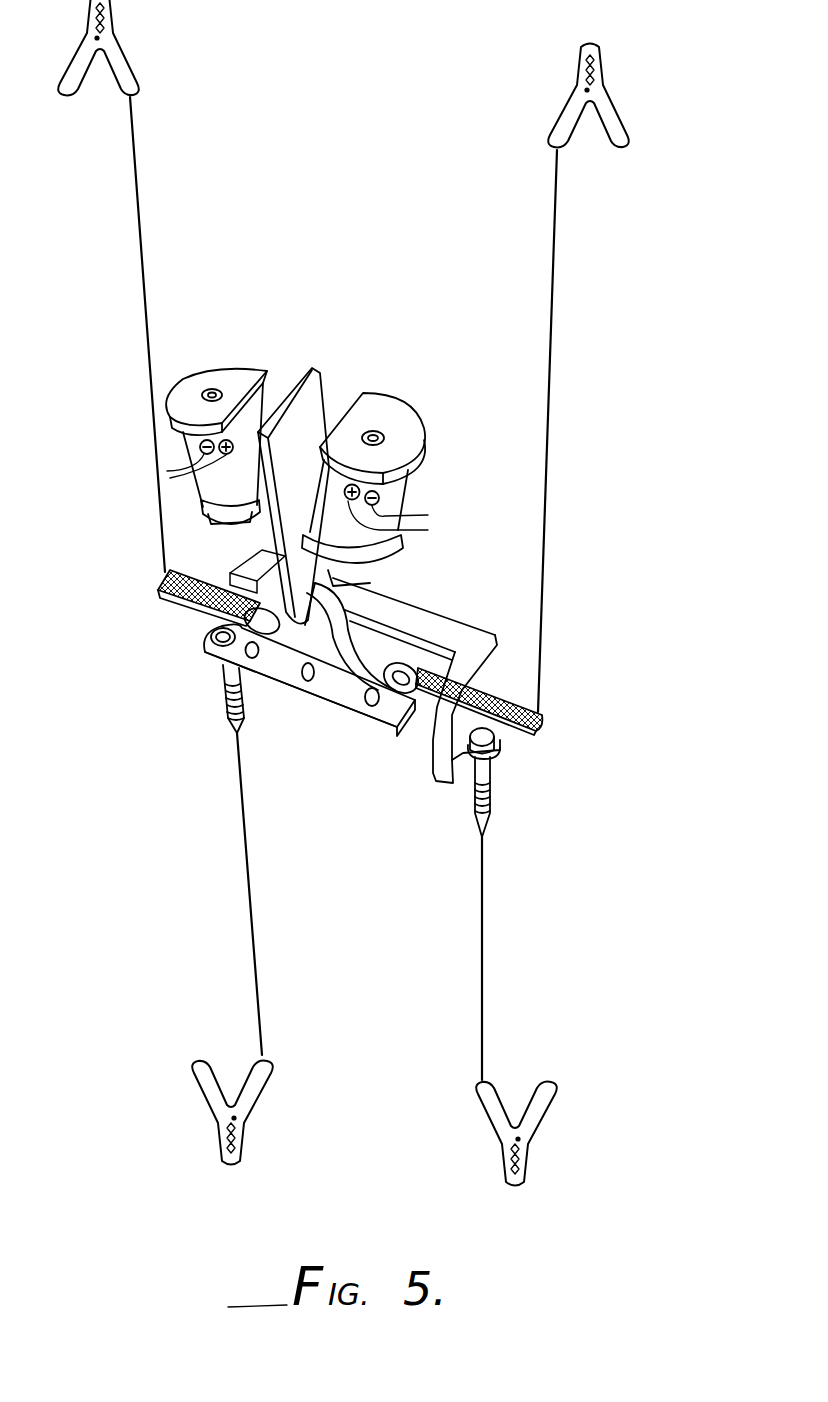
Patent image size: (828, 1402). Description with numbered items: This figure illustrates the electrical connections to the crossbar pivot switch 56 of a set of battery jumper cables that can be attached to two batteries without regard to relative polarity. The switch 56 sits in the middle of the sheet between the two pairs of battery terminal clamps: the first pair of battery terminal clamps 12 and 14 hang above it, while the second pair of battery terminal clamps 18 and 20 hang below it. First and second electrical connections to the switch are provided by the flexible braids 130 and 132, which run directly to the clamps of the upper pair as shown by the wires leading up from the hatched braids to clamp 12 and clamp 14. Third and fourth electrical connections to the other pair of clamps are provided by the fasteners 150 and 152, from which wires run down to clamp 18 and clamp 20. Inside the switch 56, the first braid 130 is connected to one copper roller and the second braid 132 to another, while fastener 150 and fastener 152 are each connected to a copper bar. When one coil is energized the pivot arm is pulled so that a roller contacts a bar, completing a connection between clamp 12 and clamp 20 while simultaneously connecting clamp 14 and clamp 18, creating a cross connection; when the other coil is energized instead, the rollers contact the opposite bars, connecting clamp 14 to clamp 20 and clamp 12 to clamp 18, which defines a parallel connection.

The battery terminal clamp 12 is at (128, 66).
The battery terminal clamp 14 is at (620, 119).
The battery terminal clamp 18 is at (253, 1107).
The battery terminal clamp 20 is at (538, 1128).
The crossbar pivot switch 56 is at (141, 528).
The first flexible braid 130 is at (533, 731).
The second flexible braid 132 is at (160, 592).
The fastener 150 is at (492, 828).
The fastener 152 is at (242, 727).